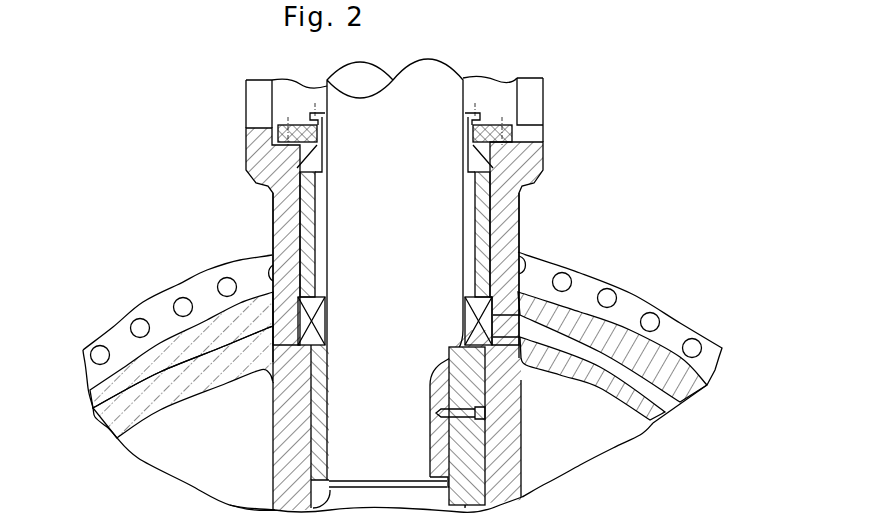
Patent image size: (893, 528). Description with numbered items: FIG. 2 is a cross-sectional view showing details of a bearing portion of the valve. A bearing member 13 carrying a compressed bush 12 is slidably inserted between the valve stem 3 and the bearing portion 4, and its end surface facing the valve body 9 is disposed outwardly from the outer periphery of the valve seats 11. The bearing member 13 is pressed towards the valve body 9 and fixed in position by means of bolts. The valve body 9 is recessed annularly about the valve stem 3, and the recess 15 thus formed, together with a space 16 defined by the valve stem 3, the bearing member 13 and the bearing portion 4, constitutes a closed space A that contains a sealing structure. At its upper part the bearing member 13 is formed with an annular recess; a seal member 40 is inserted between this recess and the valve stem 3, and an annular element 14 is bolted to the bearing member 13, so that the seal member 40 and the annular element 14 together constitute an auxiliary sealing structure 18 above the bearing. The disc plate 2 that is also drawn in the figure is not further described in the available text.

The rotor disc plate 2 is at (657, 355).
The valve stem 3 is at (337, 412).
The bearing portion 4 is at (518, 252).
The valve body 9 is at (618, 435).
The valve seats 11 is at (188, 362).
The compressed bush 12 is at (468, 215).
The bearing member 13 is at (485, 253).
The annular element 14 is at (465, 152).
The recess 15 is at (476, 344).
The space 16 is at (477, 306).
The auxiliary sealing structure 18 is at (478, 167).
The seal member 40 is at (467, 150).
The closed space A is at (393, 277).